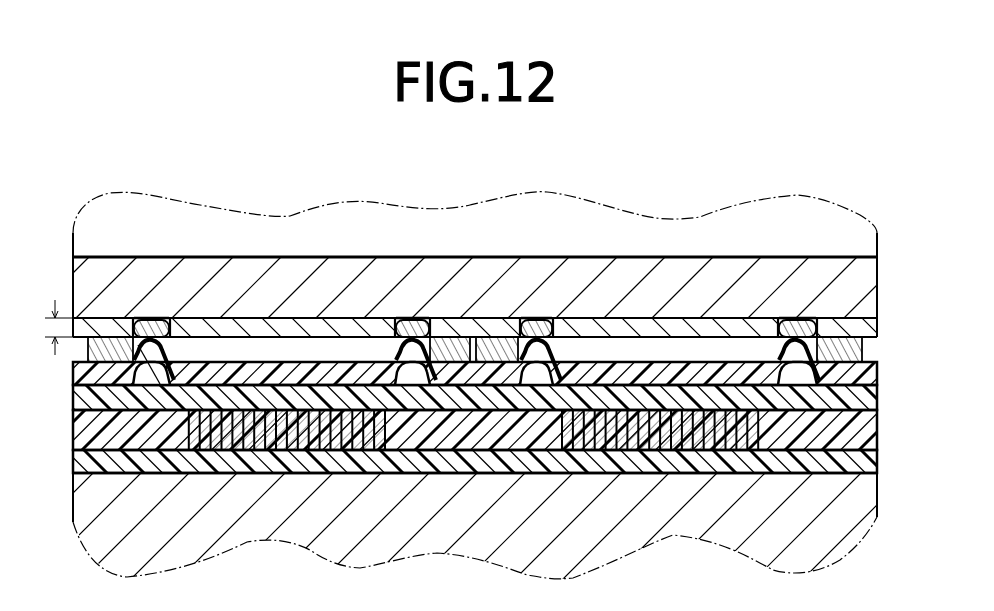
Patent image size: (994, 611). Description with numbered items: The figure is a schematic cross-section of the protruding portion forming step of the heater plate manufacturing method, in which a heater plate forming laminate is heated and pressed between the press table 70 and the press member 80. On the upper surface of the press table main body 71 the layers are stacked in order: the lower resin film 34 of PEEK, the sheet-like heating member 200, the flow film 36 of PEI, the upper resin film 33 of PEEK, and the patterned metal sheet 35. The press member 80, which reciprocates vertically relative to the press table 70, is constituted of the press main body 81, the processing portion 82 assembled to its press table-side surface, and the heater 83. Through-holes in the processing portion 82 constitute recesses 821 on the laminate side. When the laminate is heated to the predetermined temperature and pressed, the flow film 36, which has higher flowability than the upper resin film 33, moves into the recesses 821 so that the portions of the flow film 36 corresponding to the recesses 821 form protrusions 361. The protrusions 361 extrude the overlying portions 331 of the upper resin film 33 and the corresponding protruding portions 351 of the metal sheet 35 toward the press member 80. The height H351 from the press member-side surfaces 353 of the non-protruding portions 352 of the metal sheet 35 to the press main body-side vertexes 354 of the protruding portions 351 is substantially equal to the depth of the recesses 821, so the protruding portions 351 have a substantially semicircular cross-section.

The press table 70 is at (873, 537).
The press table main body 71 is at (843, 503).
The sheet-like heating member 200 is at (838, 433).
The upper resin film 33 is at (830, 373).
The portions of the upper resin film 331 is at (220, 318).
The lower resin film 34 is at (838, 463).
The metal sheet 35 is at (858, 332).
The protruding portions of the metal sheet 351 is at (143, 318).
The non-protruding portions of the metal sheet 352 is at (100, 337).
The press member-side surfaces of the non-protruding portions 353 is at (113, 336).
The press main body-side vertexes of the protruding portions 354 is at (157, 318).
The flow film 36 is at (835, 397).
The protrusions 361 is at (165, 380).
The press member 80 is at (866, 206).
The press main body 81 is at (833, 273).
The processing portion 82 is at (682, 318).
The recesses 821 is at (167, 318).
The heater 83 is at (843, 238).
The height of the protruding portions H351 is at (50, 325).